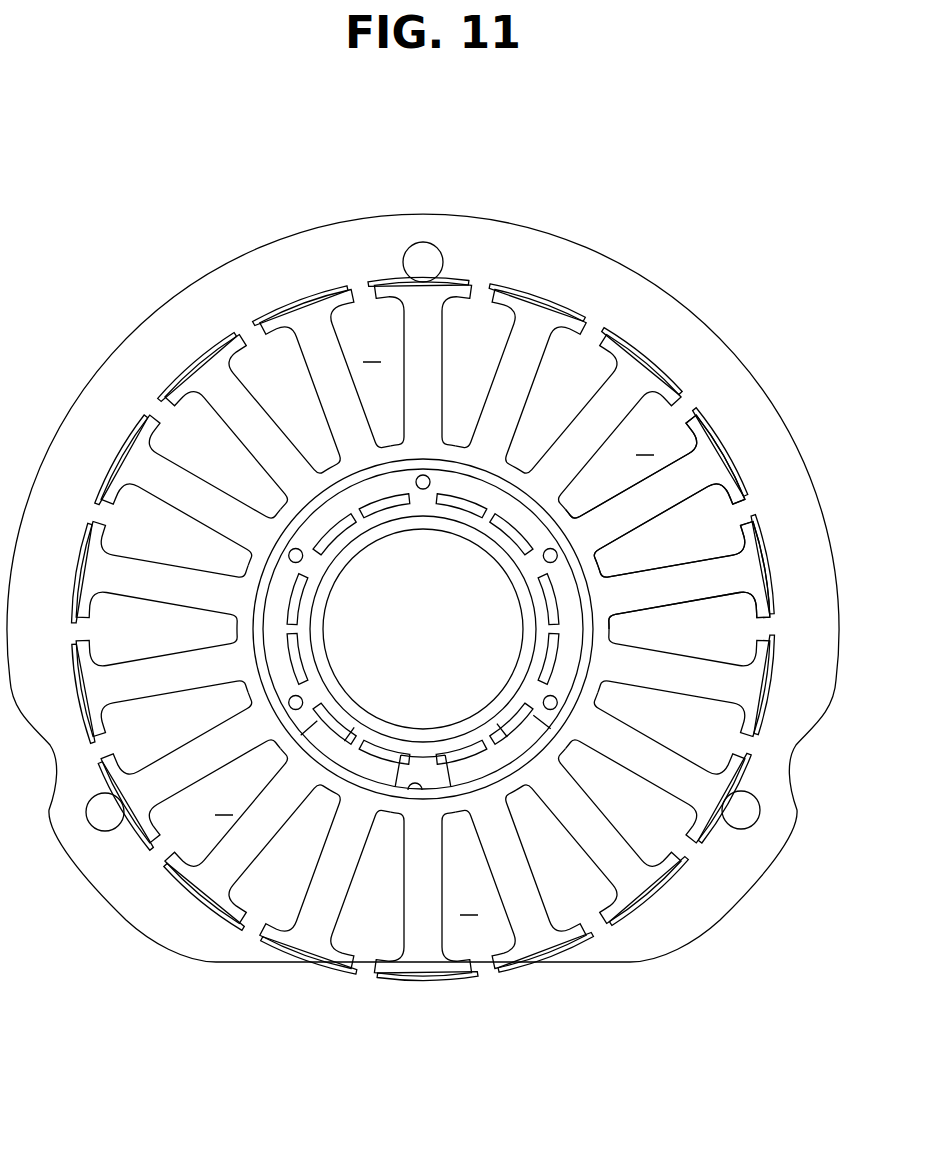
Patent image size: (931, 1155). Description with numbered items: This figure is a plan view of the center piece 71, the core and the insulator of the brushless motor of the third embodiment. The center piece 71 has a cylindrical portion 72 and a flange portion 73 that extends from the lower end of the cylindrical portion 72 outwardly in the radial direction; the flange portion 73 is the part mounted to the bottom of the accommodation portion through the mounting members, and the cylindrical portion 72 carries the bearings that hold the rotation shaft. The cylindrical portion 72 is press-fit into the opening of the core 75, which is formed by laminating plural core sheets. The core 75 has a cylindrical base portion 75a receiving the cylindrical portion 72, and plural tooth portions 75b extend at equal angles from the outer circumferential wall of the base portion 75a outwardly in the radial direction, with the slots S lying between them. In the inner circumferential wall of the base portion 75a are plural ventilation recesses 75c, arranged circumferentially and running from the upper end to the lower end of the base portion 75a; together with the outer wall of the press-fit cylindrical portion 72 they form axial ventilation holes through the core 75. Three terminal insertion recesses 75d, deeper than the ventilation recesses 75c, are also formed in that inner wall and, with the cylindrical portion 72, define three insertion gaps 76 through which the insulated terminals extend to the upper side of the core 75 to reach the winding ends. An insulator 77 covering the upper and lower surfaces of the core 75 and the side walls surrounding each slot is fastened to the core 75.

The stator core 71 is at (778, 392).
The cylindrical portion 72 is at (540, 632).
The flange portion 73 is at (692, 316).
The core 75 is at (460, 628).
The cylindrical base portion 75a is at (520, 513).
The tooth portions 75b is at (137, 420).
The ventilation recesses 75c is at (293, 592).
The terminal insertion recesses 75d is at (318, 738).
The insertion gaps 76 is at (428, 756).
The insulator 77 is at (656, 572).